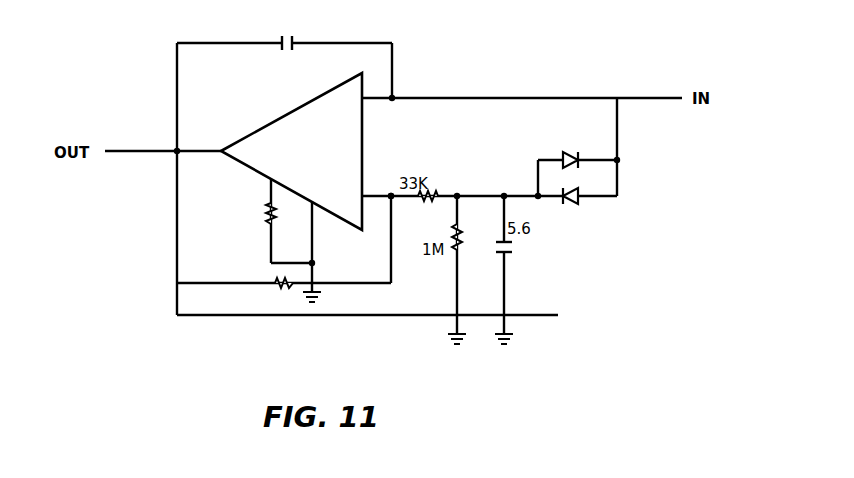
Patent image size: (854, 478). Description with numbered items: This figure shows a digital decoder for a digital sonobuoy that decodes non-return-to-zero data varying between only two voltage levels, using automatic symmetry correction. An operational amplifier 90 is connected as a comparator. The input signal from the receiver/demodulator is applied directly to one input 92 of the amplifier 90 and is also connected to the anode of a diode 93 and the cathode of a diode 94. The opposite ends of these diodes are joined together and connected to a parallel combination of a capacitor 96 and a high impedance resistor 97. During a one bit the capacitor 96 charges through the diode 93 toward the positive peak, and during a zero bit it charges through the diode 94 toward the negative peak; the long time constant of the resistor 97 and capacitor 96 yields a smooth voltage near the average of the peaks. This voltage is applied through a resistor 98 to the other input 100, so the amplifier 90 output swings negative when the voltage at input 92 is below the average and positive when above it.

The operational amplifier 90 is at (362, 128).
The input of amplifier 92 is at (394, 84).
The diode 93 is at (572, 205).
The diode 94 is at (572, 150).
The capacitor 96 is at (509, 246).
The high impedance resistor 97 is at (455, 251).
The resistor 98 is at (438, 192).
The other input of amplifier 100 is at (393, 200).